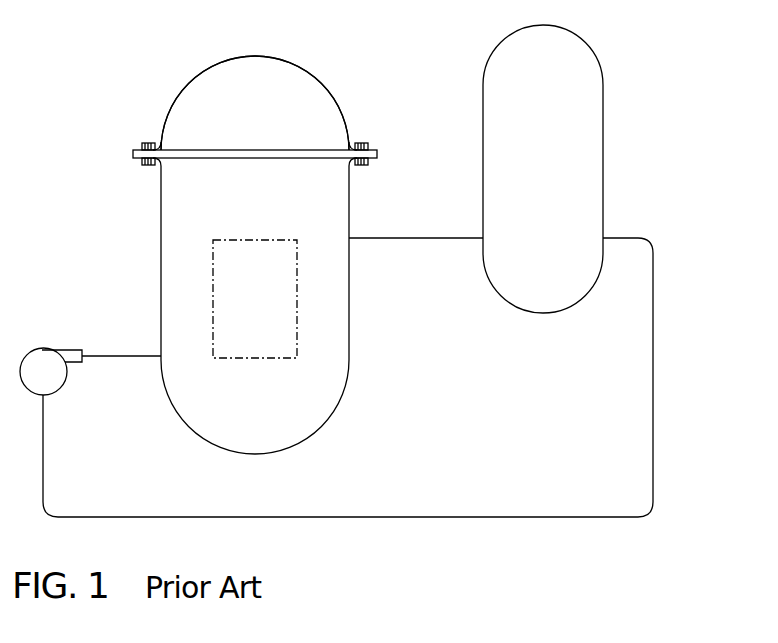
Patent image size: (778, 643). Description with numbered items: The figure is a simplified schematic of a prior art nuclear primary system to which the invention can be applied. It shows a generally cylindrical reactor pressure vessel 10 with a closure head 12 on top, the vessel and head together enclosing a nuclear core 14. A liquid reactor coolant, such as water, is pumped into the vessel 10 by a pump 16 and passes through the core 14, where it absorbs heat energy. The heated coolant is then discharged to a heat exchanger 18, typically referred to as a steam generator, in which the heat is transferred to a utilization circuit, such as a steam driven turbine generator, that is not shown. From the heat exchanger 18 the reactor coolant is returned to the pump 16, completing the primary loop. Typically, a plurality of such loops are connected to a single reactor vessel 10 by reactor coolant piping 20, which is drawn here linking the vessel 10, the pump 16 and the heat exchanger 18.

The reactor pressure vessel 10 is at (362, 333).
The closure head 12 is at (172, 103).
The nuclear core 14 is at (213, 288).
The pump 16 is at (40, 352).
The heat exchanger 18 is at (603, 117).
The reactor coolant piping 20 is at (653, 457).